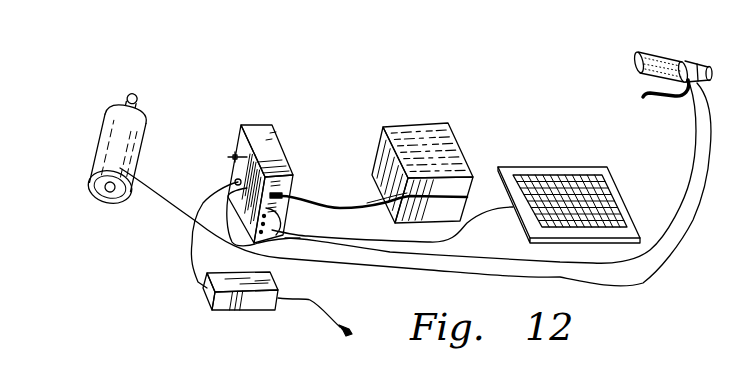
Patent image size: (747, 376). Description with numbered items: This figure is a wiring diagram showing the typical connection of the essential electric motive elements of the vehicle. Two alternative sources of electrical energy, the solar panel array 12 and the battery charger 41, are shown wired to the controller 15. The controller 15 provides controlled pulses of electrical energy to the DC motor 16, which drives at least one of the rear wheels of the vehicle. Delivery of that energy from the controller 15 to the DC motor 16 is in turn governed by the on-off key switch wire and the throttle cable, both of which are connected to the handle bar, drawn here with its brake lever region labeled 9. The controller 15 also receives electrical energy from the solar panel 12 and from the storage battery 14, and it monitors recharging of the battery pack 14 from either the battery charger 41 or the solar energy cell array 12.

The DC motor 16 is at (102, 140).
The controller 15 is at (255, 125).
The storage battery 14 is at (400, 125).
The solar panel array 12 is at (580, 166).
The brake lever 9 is at (662, 102).
The battery charger 41 is at (258, 307).